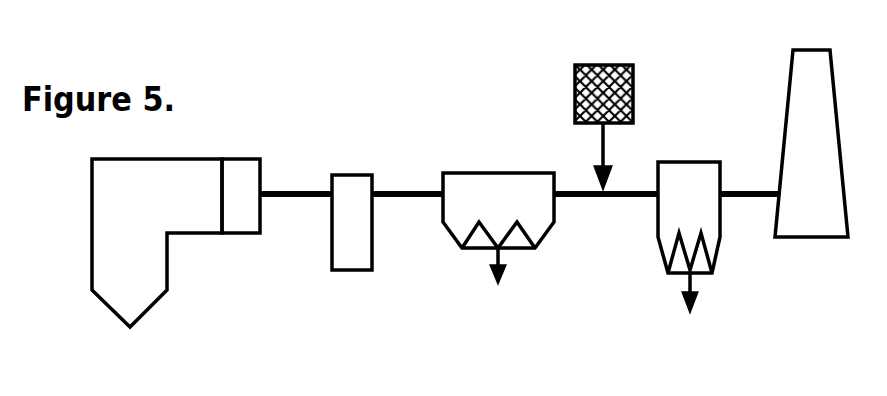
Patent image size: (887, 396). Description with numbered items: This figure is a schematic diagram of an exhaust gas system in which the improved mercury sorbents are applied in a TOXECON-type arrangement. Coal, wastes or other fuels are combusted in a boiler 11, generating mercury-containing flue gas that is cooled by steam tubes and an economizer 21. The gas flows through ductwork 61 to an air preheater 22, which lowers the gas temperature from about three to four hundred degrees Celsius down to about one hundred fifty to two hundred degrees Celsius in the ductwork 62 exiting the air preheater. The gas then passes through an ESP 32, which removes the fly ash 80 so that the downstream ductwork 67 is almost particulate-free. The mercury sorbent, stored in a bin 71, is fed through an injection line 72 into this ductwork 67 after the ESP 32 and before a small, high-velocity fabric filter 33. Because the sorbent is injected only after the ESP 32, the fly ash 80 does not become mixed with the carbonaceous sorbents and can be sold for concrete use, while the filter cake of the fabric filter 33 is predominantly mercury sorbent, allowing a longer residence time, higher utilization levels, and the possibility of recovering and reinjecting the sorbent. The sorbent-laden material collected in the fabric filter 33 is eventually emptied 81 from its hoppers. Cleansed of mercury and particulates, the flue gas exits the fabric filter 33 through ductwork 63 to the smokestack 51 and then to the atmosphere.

The boiler 11 is at (113, 290).
The economizer 21 is at (235, 217).
The air preheater 22 is at (347, 251).
The ESP 32 is at (468, 190).
The fabric filter 33 is at (672, 180).
The smokestack 51 is at (795, 223).
The ductwork 61 is at (288, 200).
The ductwork 62 is at (398, 203).
The ductwork 63 is at (733, 200).
The ductwork 67 is at (582, 200).
The bin 71 is at (580, 66).
The injection line 72 is at (600, 152).
The fly ash 80 is at (498, 283).
The emptied sorbents 81 is at (688, 308).